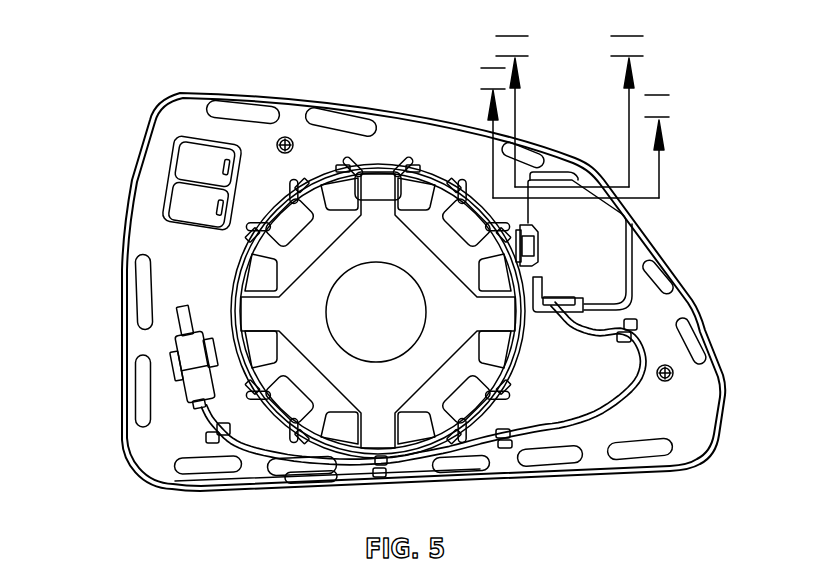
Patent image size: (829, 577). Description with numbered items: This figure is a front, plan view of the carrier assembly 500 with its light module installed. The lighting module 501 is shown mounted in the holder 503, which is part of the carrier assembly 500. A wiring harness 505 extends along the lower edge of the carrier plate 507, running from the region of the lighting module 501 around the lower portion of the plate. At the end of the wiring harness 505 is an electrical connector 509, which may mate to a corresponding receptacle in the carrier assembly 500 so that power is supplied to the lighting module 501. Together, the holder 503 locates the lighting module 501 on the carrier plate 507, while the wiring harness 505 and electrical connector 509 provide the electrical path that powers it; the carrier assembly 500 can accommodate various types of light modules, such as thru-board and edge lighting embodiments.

The carrier assembly 500 is at (414, 280).
The lighting module 501 is at (603, 291).
The holder 503 is at (636, 243).
The wiring harness 505 is at (587, 414).
The carrier plate 507 is at (693, 405).
The electrical connector 509 is at (186, 356).